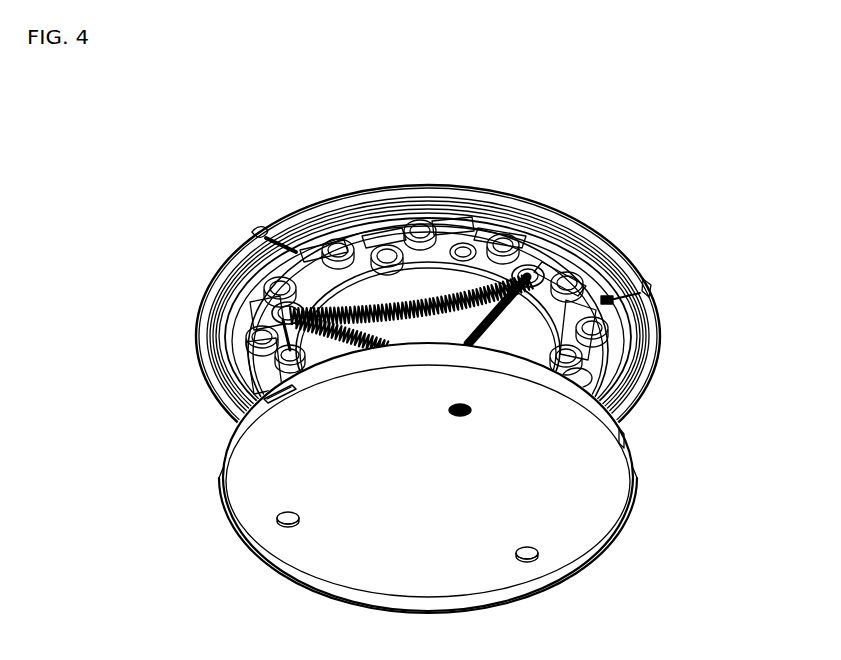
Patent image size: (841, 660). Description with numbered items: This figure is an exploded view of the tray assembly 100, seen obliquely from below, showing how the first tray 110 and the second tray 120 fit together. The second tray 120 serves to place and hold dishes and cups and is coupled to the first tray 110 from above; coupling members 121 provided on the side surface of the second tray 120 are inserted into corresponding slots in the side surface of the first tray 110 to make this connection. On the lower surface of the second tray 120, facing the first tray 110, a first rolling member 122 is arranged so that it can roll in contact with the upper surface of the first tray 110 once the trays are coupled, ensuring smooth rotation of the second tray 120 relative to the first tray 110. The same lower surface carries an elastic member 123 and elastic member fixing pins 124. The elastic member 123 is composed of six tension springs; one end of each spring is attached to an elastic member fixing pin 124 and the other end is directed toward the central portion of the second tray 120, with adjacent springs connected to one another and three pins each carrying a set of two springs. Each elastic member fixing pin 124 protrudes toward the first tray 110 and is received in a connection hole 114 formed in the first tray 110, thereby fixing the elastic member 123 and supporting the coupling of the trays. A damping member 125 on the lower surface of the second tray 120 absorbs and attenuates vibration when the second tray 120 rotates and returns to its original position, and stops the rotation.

The tray assembly 100 is at (160, 126).
The first tray 110 is at (637, 487).
The connection hole 114 is at (287, 523).
The second tray 120 is at (637, 253).
The coupling member 121 is at (287, 242).
The first rolling member 122 is at (547, 360).
The elastic member 123 is at (367, 305).
The elastic member fixing pin 124 is at (272, 313).
The damping member 125 is at (469, 234).